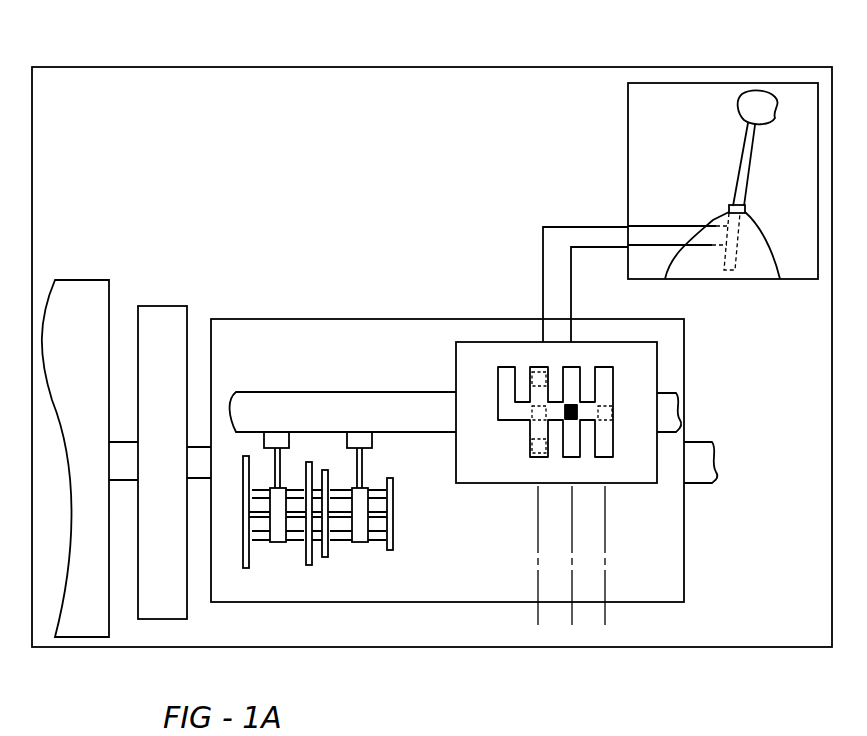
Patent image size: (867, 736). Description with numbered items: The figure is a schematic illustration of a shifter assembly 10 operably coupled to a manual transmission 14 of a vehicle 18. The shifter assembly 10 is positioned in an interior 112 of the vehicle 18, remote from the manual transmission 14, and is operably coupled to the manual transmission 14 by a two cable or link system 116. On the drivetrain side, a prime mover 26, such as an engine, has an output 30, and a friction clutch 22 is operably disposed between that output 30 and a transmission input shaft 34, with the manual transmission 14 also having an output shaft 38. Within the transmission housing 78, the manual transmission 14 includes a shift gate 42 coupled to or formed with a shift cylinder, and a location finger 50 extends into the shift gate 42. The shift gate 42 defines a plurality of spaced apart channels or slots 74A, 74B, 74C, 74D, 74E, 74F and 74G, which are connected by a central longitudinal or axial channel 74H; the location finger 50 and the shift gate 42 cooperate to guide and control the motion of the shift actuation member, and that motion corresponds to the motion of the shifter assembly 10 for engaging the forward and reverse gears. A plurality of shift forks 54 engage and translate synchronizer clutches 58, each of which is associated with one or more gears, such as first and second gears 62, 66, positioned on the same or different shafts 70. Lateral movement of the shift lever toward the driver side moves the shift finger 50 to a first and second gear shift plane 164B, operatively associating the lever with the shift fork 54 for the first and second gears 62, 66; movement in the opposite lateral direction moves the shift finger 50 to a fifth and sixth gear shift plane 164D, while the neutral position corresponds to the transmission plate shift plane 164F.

The shifter assembly 10 is at (724, 153).
The manual transmission 14 is at (340, 312).
The vehicle 18 is at (298, 67).
The clutch 22 is at (166, 297).
The prime mover 26 is at (84, 270).
The output 30 is at (128, 480).
The transmission input shaft 34 is at (200, 478).
The output shaft 38 is at (700, 442).
The shift gate 42 is at (472, 335).
The location finger 50 is at (574, 403).
The shift forks 54 is at (352, 468).
The synchronizer clutches 58 is at (278, 542).
The first gear 62 is at (246, 568).
The second gear 66 is at (309, 565).
The shafts 70 is at (375, 518).
The channel 74A is at (530, 365).
The channel 74B is at (530, 436).
The channel 74C is at (580, 386).
The channel 74D is at (585, 417).
The channel 74E is at (615, 377).
The channel 74F is at (615, 441).
The channel 74G is at (497, 385).
The central longitudinal channel 74H is at (587, 413).
The transmission housing 78 is at (684, 550).
The interior 112 is at (628, 108).
The two cable or link system 116 is at (530, 230).
The first and second gear shift plane 164B is at (540, 615).
The fifth and sixth gear shift plane 164D is at (605, 617).
The transmission plate shift plane 164F is at (572, 613).